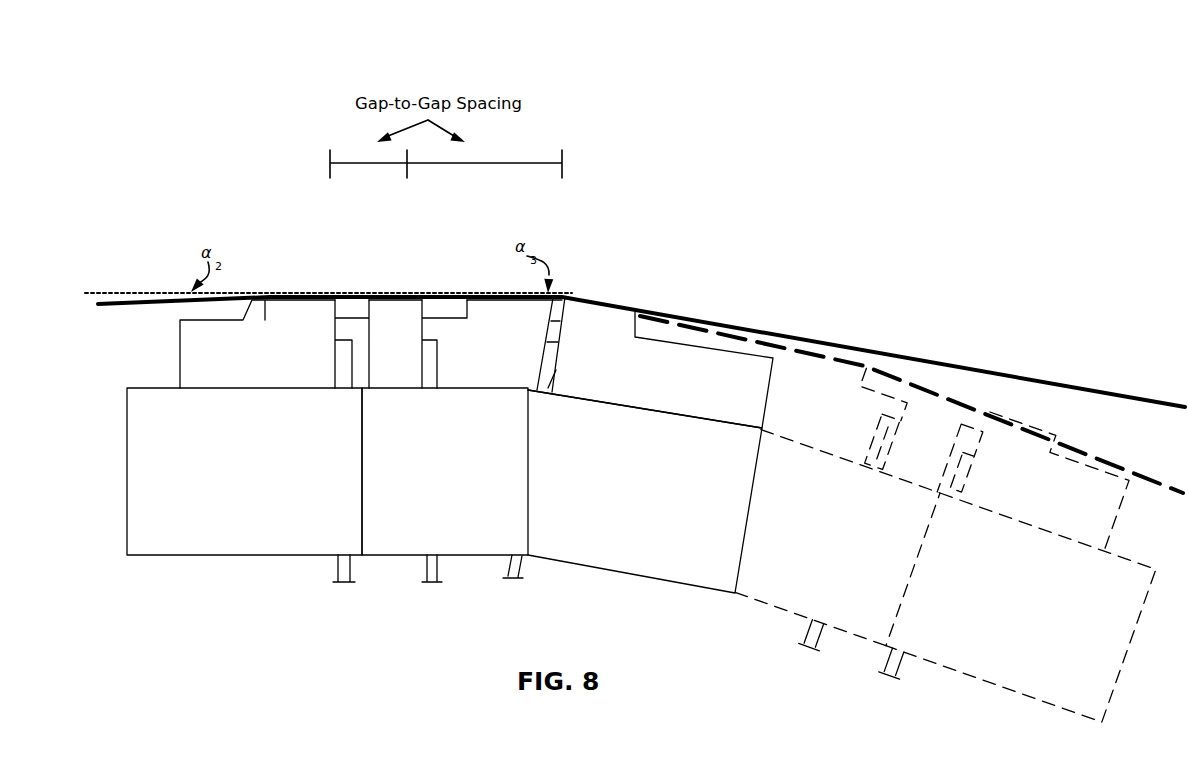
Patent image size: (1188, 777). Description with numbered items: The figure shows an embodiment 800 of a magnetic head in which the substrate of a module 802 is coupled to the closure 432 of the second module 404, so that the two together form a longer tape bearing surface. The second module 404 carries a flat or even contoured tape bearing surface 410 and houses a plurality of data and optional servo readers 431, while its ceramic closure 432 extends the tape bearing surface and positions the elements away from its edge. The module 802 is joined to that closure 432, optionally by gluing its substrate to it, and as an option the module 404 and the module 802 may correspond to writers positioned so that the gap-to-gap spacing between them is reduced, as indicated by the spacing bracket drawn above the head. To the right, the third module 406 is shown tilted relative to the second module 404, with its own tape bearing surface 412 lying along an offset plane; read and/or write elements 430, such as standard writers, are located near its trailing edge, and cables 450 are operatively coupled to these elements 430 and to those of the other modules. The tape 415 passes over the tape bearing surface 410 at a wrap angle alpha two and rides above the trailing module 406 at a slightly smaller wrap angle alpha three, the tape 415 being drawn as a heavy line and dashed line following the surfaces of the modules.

The embodiment 800 is at (192, 107).
The second module 404 is at (253, 300).
The tape bearing surface 410 is at (289, 284).
The data and optional servo readers 431 is at (336, 284).
The closure 432 is at (353, 310).
The read and/or write elements 430 is at (568, 284).
The tape bearing surface 412 is at (591, 286).
The tape 415 is at (663, 321).
The module 802 is at (423, 328).
The third module 406 is at (770, 390).
The cables 450 is at (352, 572).